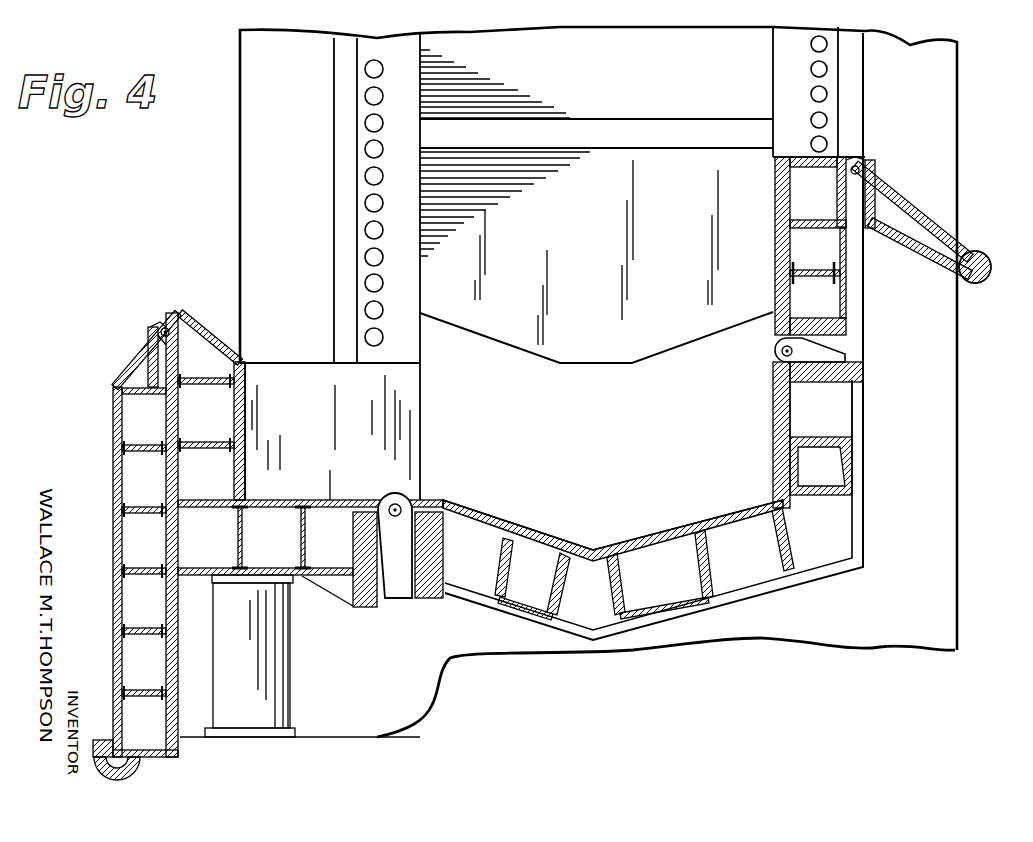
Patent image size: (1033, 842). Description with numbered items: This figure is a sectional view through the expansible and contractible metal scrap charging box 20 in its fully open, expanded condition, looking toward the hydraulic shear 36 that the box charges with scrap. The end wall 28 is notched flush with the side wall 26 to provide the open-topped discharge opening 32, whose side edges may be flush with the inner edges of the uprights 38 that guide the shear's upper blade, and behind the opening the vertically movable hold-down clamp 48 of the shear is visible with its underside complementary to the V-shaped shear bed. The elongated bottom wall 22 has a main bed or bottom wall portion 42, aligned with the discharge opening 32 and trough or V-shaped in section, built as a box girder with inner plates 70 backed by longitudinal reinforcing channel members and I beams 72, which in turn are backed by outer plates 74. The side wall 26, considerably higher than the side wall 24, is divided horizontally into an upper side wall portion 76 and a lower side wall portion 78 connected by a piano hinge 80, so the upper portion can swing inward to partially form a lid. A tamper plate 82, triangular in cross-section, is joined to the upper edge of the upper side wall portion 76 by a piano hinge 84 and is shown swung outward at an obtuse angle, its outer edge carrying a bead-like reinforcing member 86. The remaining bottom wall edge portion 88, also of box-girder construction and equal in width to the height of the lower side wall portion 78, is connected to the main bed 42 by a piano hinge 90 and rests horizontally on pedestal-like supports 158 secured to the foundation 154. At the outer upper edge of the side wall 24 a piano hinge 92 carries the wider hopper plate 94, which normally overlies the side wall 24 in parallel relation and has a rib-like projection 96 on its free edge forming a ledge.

The metal scrap charging box 20 is at (874, 492).
The bottom wall 22 is at (675, 522).
The side wall 24 is at (248, 428).
The side wall 26 is at (771, 420).
The end wall 28 is at (314, 374).
The discharge opening 32 is at (422, 445).
The hydraulic shear 36 is at (963, 140).
The uprights 38 is at (420, 298).
The main bed or bottom wall portion 42 is at (512, 527).
The hold-down clamp 48 is at (668, 337).
The inner plates 70 is at (660, 543).
The I beams 72 is at (608, 575).
The outer plates 74 is at (770, 588).
The upper side wall portion 76 is at (777, 244).
The lower side wall portion 78 is at (772, 460).
The piano hinge 80 is at (780, 352).
The tamper plate 82 is at (925, 215).
The piano hinge 84 is at (866, 158).
The bead-like reinforcing member 86 is at (991, 260).
The bottom wall edge portion 88 is at (338, 498).
The piano hinge 90 is at (413, 492).
The piano hinge 92 is at (161, 328).
The hopper plate 94 is at (114, 447).
The rib-like projection 96 is at (110, 740).
The foundation 154 is at (366, 737).
The pedestal-like supports 158 is at (290, 682).